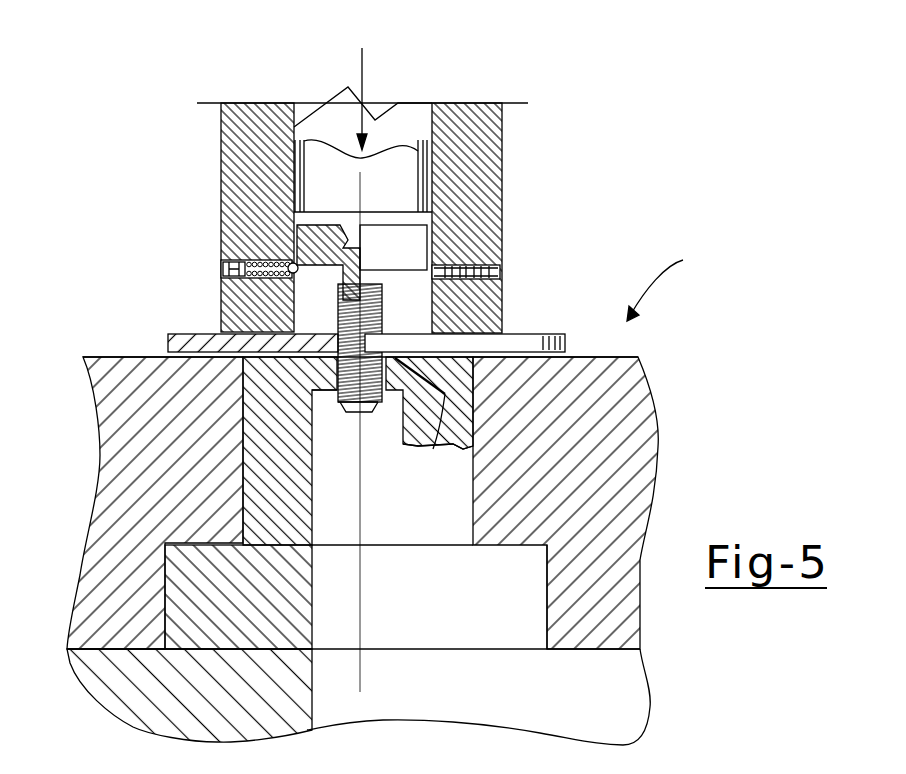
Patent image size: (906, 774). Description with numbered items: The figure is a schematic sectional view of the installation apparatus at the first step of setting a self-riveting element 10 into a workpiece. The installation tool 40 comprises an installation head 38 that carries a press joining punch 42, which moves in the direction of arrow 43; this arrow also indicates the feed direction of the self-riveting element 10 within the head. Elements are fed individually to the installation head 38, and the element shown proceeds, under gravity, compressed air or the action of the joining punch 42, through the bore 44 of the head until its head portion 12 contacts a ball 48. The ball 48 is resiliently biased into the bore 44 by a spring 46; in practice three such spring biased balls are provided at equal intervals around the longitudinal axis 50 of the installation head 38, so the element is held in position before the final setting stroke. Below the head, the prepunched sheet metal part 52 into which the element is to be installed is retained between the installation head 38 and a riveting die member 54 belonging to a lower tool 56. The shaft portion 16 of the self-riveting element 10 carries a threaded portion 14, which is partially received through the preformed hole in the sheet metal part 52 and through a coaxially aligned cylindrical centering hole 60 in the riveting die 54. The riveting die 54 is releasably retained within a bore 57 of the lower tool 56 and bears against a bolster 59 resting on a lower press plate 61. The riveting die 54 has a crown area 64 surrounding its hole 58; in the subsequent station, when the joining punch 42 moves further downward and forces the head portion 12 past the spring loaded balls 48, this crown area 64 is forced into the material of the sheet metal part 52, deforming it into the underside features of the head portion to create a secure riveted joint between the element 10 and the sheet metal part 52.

The self-riveting element 10 is at (338, 320).
The head portion 12 is at (390, 240).
The threaded portion 14 is at (290, 515).
The shaft portion 16 is at (338, 404).
The installation head 38 is at (503, 205).
The installation tool 40 is at (675, 277).
The press joining punch 42 is at (412, 157).
The arrow 43 is at (363, 86).
The bore 44 is at (294, 127).
The spring 46 is at (262, 278).
The ball 48 is at (290, 263).
The longitudinal axis 50 is at (360, 250).
The sheet metal part 52 is at (533, 333).
The riveting die member 54 is at (457, 446).
The lower tool 56 is at (658, 412).
The bore 57 is at (542, 600).
The hole 58 is at (323, 364).
The bolster 59 is at (193, 548).
The cylindrical centering hole 60 is at (402, 392).
The lower press plate 61 is at (157, 723).
The crown area 64 is at (433, 449).